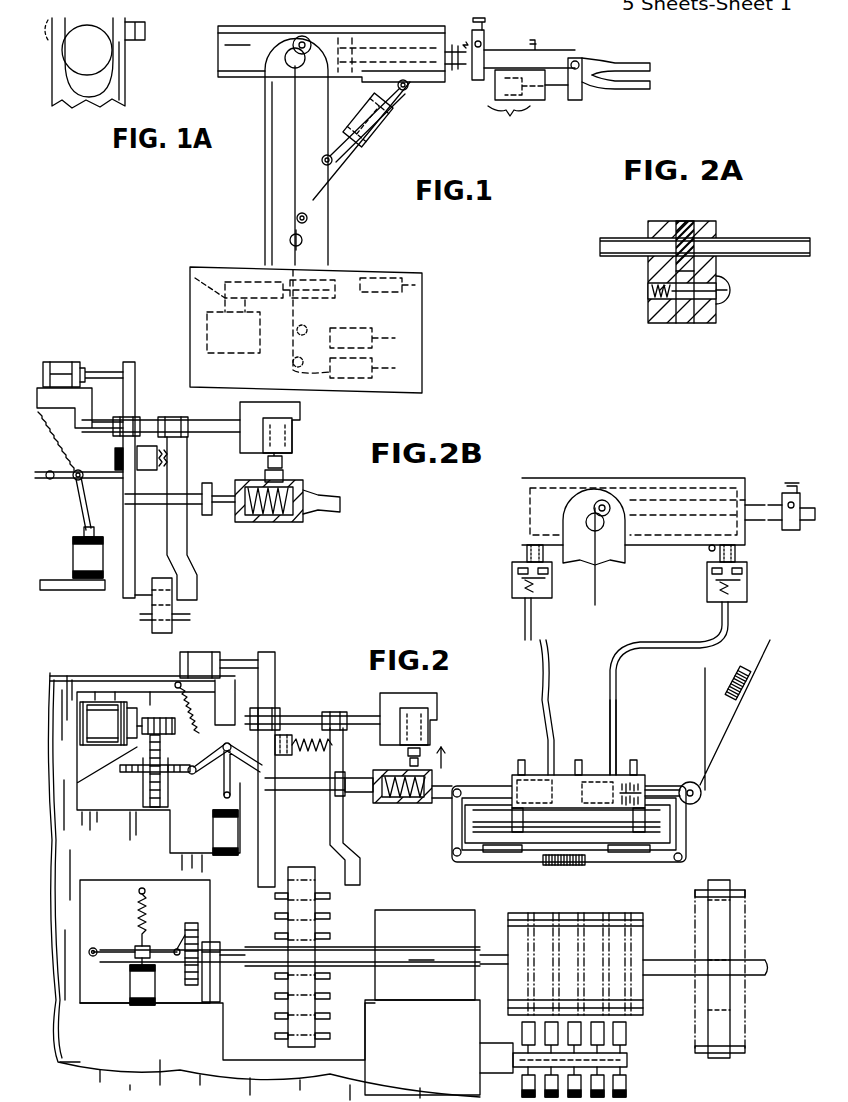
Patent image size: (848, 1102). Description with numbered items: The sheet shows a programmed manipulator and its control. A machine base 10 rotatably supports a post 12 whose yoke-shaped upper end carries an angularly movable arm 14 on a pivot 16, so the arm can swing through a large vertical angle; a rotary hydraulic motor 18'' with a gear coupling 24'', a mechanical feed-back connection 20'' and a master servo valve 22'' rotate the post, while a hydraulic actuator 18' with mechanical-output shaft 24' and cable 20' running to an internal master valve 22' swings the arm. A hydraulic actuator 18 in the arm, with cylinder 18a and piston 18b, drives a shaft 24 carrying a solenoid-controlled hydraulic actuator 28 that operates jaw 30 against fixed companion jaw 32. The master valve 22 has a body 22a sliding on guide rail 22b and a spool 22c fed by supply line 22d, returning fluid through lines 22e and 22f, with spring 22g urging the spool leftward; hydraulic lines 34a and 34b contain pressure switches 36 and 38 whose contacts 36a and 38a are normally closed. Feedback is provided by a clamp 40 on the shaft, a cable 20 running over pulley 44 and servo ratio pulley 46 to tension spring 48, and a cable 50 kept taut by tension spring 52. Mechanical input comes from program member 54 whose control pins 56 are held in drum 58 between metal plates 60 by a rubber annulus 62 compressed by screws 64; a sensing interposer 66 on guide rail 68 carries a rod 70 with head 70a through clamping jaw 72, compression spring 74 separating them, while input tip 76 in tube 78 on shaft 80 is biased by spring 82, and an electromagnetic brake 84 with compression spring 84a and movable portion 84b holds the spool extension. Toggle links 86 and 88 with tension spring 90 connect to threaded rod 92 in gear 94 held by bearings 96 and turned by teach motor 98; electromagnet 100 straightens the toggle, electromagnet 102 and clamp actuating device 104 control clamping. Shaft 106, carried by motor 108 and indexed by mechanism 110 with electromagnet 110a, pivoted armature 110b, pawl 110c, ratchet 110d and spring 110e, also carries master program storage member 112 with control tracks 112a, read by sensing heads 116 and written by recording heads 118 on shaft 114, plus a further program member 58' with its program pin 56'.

In FIG. 1, the machine base 10 is at (230, 262).
In FIG. 1A, the post 12 is at (118, 97).
In FIG. 1, the post 12 is at (265, 193).
In FIG. 2B, the post 12 is at (625, 560).
In FIG. 1, the arm 14 is at (518, 87).
In FIG. 1A, the pivot 16 is at (56, 20).
In FIG. 1, the pivot 16 is at (288, 64).
In FIG. 1A, the hydraulic actuator 18 is at (87, 50).
In FIG. 1, the hydraulic actuator 18 is at (331, 43).
In FIG. 2B, the hydraulic actuator 18 is at (633, 494).
In FIG. 1, the hydraulic actuator 18' is at (374, 122).
In FIG. 1, the rotary hydraulic motor 18'' is at (229, 344).
In FIG. 2B, the cylinder 18a is at (548, 486).
In FIG. 2B, the piston 18b is at (632, 498).
In FIG. 1A, the cable 20 is at (144, 71).
In FIG. 1, the cable 20 is at (328, 136).
In FIG. 2B, the cable 20 is at (615, 600).
In FIG. 2, the cable 20 is at (655, 715).
In FIG. 1, the cable 20' is at (361, 141).
In FIG. 1, the mechanical feed-back connection 20'' is at (292, 304).
In FIG. 1, the master valve 22 is at (328, 370).
In FIG. 2, the master valve 22 is at (553, 785).
In FIG. 1, the master valve 22' is at (362, 323).
In FIG. 1, the master servo valve 22'' is at (391, 264).
In FIG. 2, the valve body 22a is at (528, 775).
In FIG. 2, the guide rail 22b is at (600, 828).
In FIG. 2, the spool 22c is at (565, 775).
In FIG. 2, the supply line 22d is at (580, 760).
In FIG. 2, the return line 22e is at (518, 758).
In FIG. 2, the return line 22f is at (637, 762).
In FIG. 2, the spring 22g is at (622, 775).
In FIG. 1, the shaft 24 is at (461, 71).
In FIG. 2B, the shaft 24 is at (809, 486).
In FIG. 1, the mechanical-output shaft 24' is at (358, 98).
In FIG. 1, the gear coupling 24'' is at (187, 268).
In FIG. 1, the solenoid-controlled hydraulic actuator 28 is at (535, 100).
In FIG. 1, the jaw 30 is at (642, 88).
In FIG. 1, the companion jaw 32 is at (642, 62).
In FIG. 2B, the hydraulic line 34a is at (527, 548).
In FIG. 2B, the hydraulic line 34b is at (735, 548).
In FIG. 2B, the pressure switch 36 is at (747, 594).
In FIG. 2B, the contacts 36a is at (747, 572).
In FIG. 2B, the pressure switch 38 is at (515, 598).
In FIG. 2B, the contacts 38a is at (555, 590).
In FIG. 1, the clamp 40 is at (486, 46).
In FIG. 2B, the clamp 40 is at (788, 492).
In FIG. 1A, the pulley 44 is at (140, 36).
In FIG. 1, the pulley 44 is at (298, 38).
In FIG. 2B, the pulley 44 is at (612, 500).
In FIG. 2, the servo ratio pulley 46 is at (702, 792).
In FIG. 2, the tension spring 48 is at (748, 690).
In FIG. 2, the cable 50 is at (652, 790).
In FIG. 2, the tension spring 52 is at (558, 868).
In FIG. 2, the program member 54 is at (344, 924).
In FIG. 2A, the control pin 56 is at (703, 232).
In FIG. 2B, the control pin 56 is at (123, 623).
In FIG. 2, the control pin 56 is at (262, 1010).
In FIG. 2, the program pin 56' is at (751, 1070).
In FIG. 2A, the program drum 58 is at (724, 250).
In FIG. 2B, the program drum 58 is at (160, 589).
In FIG. 2, the program drum 58 is at (290, 963).
In FIG. 2, the program member 58' is at (730, 950).
In FIG. 2A, the metal plates 60 is at (716, 316).
In FIG. 2A, the annulus 62 is at (682, 222).
In FIG. 2A, the screws 64 is at (722, 286).
In FIG. 2B, the sensing interposer 66 is at (110, 605).
In FIG. 2, the sensing interposer 66 is at (284, 844).
In FIG. 2B, the guide rail 68 is at (210, 425).
In FIG. 2, the guide rail 68 is at (358, 714).
In FIG. 2B, the rod 70 is at (155, 496).
In FIG. 2, the rod 70 is at (300, 784).
In FIG. 2B, the head 70a is at (212, 512).
In FIG. 2, the head 70a is at (340, 796).
In FIG. 2B, the clamping jaw 72 is at (190, 562).
In FIG. 2, the clamping jaw 72 is at (330, 812).
In FIG. 2, the compression spring 74 is at (300, 752).
In FIG. 2B, the input tip 76 is at (207, 483).
In FIG. 2, the input tip 76 is at (358, 778).
In FIG. 2B, the tube 78 is at (275, 522).
In FIG. 2, the tube 78 is at (400, 804).
In FIG. 2B, the shaft 80 is at (318, 494).
In FIG. 2, the shaft 80 is at (449, 772).
In FIG. 2, the spring 82 is at (388, 770).
In FIG. 2B, the electromagnetic brake 84 is at (292, 425).
In FIG. 2, the electromagnetic brake 84 is at (430, 716).
In FIG. 2B, the compression spring 84a is at (284, 458).
In FIG. 2, the compression spring 84a is at (420, 748).
In FIG. 2B, the movable brake portion 84b is at (285, 475).
In FIG. 2B, the toggle link 86 is at (80, 470).
In FIG. 2, the toggle link 86 is at (246, 762).
In FIG. 2B, the toggle link 88 is at (50, 470).
In FIG. 2, the toggle link 88 is at (205, 758).
In FIG. 2, the tension spring 90 is at (188, 705).
In FIG. 2, the threaded rod 92 is at (135, 778).
In FIG. 2, the gear 94 is at (162, 795).
In FIG. 2, the bearings 96 is at (140, 800).
In FIG. 2, the teach motor 98 is at (108, 728).
In FIG. 2B, the electromagnet 100 is at (76, 540).
In FIG. 2, the electromagnet 100 is at (213, 830).
In FIG. 2B, the electromagnet 102 is at (66, 385).
In FIG. 2, the electromagnet 102 is at (200, 645).
In FIG. 2B, the clamp actuating device 104 is at (140, 425).
In FIG. 2, the clamp actuating device 104 is at (330, 714).
In FIG. 2, the shaft 106 is at (250, 965).
In FIG. 2, the motor 108 is at (422, 1002).
In FIG. 2, the indexing mechanism 110 is at (133, 937).
In FIG. 2, the electromagnet 110a is at (128, 990).
In FIG. 2, the pivoted armature 110b is at (96, 958).
In FIG. 2, the pawl 110c is at (182, 935).
In FIG. 2, the ratchet 110d is at (212, 942).
In FIG. 2, the spring 110e is at (140, 888).
In FIG. 2, the master program storage member 112 is at (632, 905).
In FIG. 2, the control tracks 112a is at (565, 935).
In FIG. 2, the shaft 114 is at (627, 1060).
In FIG. 2, the sensing heads 116 is at (612, 1040).
In FIG. 2, the recording heads 118 is at (630, 1085).